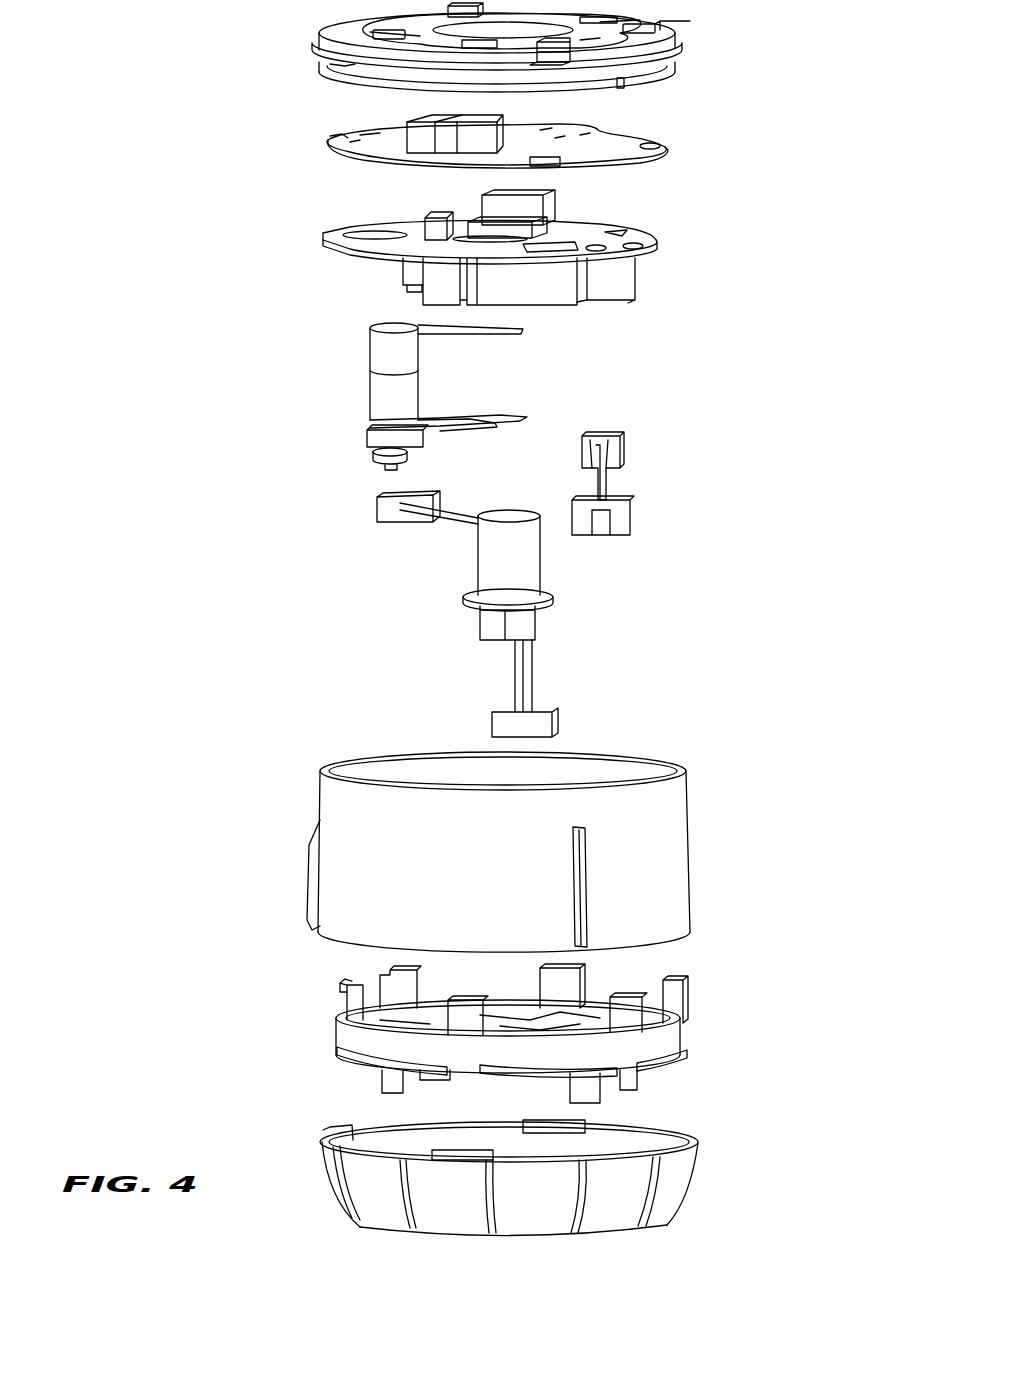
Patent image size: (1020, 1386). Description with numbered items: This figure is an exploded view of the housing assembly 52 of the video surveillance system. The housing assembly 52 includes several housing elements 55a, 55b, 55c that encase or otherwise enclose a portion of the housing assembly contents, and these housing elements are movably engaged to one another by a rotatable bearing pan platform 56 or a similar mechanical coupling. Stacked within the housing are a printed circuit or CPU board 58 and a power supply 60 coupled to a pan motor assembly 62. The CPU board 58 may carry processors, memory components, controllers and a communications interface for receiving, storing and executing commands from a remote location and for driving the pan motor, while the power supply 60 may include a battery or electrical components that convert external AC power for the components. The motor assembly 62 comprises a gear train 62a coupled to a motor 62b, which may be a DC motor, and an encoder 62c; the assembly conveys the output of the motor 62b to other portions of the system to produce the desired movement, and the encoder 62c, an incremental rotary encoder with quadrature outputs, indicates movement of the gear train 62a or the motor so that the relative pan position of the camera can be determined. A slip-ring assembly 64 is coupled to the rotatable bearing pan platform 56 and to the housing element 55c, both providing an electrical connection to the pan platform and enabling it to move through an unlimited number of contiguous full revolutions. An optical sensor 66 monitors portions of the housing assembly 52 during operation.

The housing assembly 52 is at (290, 12).
The housing element 55a is at (672, 47).
The CPU board 58 is at (625, 140).
The power supply 60 is at (632, 272).
The pan motor assembly 62 is at (348, 322).
The gear train 62a is at (408, 455).
The motor 62b is at (408, 380).
The encoder 62c is at (523, 332).
The optical sensor 66 is at (630, 505).
The slip-ring assembly 64 is at (523, 565).
The housing element 55b is at (665, 840).
The rotatable bearing pan platform 56 is at (665, 1040).
The housing element 55c is at (695, 1175).